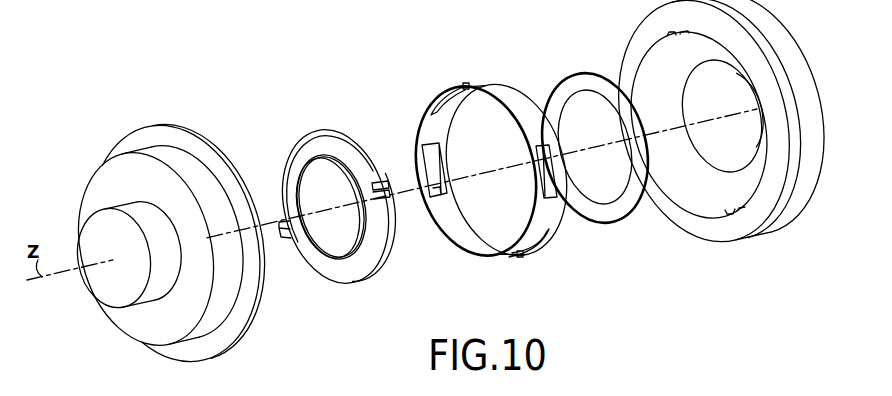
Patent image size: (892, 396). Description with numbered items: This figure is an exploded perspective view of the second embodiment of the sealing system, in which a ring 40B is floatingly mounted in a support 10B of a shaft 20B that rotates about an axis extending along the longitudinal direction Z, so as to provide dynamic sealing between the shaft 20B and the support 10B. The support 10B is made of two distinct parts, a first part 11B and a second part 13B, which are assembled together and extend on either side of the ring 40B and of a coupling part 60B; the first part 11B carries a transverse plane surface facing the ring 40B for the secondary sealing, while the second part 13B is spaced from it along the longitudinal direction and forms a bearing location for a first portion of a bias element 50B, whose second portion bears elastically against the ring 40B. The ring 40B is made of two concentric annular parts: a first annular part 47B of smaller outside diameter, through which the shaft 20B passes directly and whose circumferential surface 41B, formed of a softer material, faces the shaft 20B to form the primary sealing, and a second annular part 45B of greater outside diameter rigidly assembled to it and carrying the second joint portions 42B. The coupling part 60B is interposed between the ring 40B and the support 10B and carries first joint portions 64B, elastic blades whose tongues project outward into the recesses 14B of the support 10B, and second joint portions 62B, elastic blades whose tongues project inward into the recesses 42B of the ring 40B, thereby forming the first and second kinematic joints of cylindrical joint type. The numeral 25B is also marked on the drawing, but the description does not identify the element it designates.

The support 10B is at (432, 181).
The first part of the support 11B is at (152, 210).
The second part of the support 13B is at (708, 155).
The first joint portions 14B is at (671, 37).
The shaft 20B is at (114, 290).
The flange portion 25B is at (247, 393).
The ring 40B is at (337, 201).
The circumferential surface 41B is at (336, 258).
The second joint portions 42B is at (388, 181).
The second annular part 45B is at (351, 134).
The first annular part 47B is at (359, 266).
The bias element 50B is at (574, 60).
The coupling part 60B is at (491, 150).
The second joint portions 62B is at (546, 172).
The first joint portions 64B is at (442, 104).